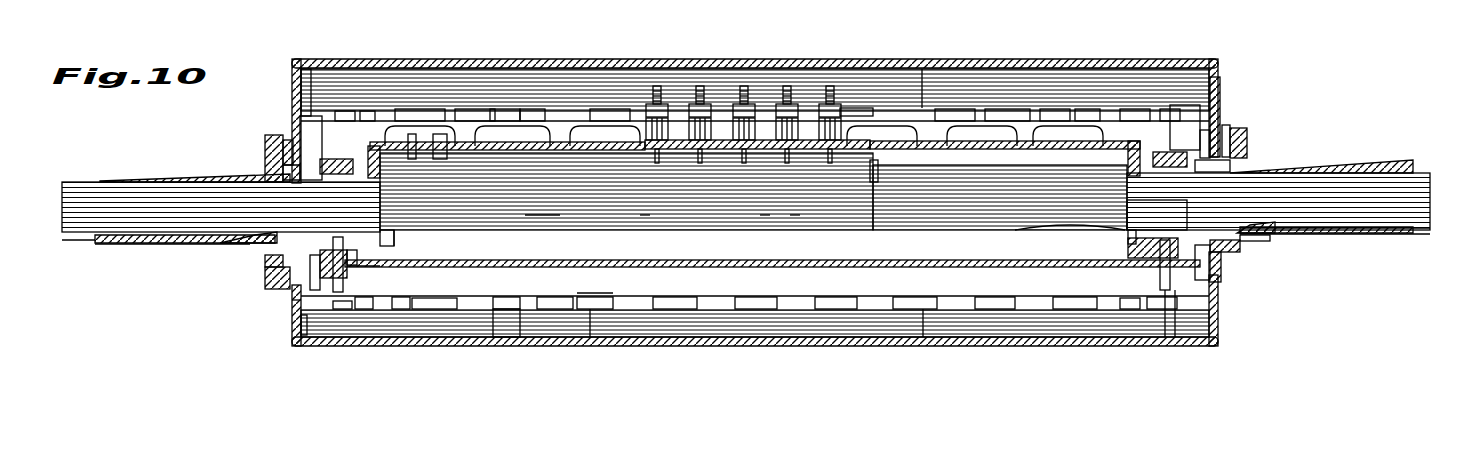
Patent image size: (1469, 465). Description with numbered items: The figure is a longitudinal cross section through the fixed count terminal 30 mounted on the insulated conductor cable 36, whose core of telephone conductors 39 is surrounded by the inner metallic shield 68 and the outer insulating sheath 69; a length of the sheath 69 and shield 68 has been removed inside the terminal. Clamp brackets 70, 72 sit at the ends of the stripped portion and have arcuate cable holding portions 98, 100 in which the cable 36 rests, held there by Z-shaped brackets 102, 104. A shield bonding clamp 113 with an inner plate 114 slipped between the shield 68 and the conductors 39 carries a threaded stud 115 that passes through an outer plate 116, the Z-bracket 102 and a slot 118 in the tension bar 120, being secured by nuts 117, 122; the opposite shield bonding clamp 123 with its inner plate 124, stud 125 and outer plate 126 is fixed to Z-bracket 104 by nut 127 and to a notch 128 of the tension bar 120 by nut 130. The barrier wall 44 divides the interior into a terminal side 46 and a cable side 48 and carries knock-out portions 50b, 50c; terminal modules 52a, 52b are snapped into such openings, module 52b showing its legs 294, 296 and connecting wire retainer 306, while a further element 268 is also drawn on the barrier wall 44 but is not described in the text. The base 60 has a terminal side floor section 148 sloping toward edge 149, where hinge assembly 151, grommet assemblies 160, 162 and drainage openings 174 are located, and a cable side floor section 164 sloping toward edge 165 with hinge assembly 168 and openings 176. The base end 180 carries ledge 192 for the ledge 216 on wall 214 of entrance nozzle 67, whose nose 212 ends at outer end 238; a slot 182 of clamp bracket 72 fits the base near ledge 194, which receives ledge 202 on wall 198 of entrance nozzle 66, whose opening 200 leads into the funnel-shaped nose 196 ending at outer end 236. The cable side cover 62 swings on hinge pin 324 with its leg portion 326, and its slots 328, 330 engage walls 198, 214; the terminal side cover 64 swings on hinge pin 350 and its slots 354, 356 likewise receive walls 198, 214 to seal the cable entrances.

The fixed count terminal 30 is at (1330, 54).
The insulated conductor cable 36 is at (80, 186).
The telephone conductors 39 is at (525, 215).
The barrier wall 44 is at (990, 137).
The terminal side 46 is at (470, 127).
The cable side 48 is at (718, 293).
The knock-out portion 50b is at (1073, 141).
The knock-out portion 50c is at (582, 142).
The terminal module 52a is at (766, 128).
The terminal module 52b is at (795, 215).
The base 60 is at (290, 306).
The cable side cover 62 is at (806, 348).
The terminal side cover 64 is at (700, 58).
The entrance nozzle 66 is at (1335, 165).
The entrance nozzle 67 is at (146, 176).
The inner metallic shield 68 is at (230, 232).
The outer insulating sheath 69 is at (215, 248).
The clamp bracket 70 is at (351, 159).
The clamp bracket 72 is at (1162, 150).
The cable holding portion 98 is at (292, 170).
The cable holding portion 100 is at (1215, 162).
The Z-shaped bracket 102 is at (345, 263).
The Z-shaped bracket 104 is at (1150, 262).
The shield bonding clamp 113 is at (396, 238).
The inner plate 114 is at (400, 232).
The threaded stud 115 is at (338, 290).
The outer plate 116 is at (360, 268).
The nut 117 is at (345, 256).
The slot 118 is at (300, 322).
The tension bar 120 is at (850, 268).
The nut 122 is at (356, 266).
The shield bonding clamp 123 is at (1112, 240).
The inner plate 124 is at (1050, 225).
The threaded stud 125 is at (1175, 275).
The outer plate 126 is at (1210, 280).
The nut 127 is at (1140, 252).
The notch 128 is at (1168, 222).
The nut 130 is at (1160, 275).
The terminal side floor section 148 is at (560, 128).
The elongated edge 149 is at (510, 121).
The hinge assembly 151 is at (963, 108).
The grommet assembly 160 is at (425, 126).
The grommet assembly 162 is at (1040, 126).
The cable side floor section 164 is at (478, 310).
The elongated edge 165 is at (512, 306).
The hinge assembly 168 is at (535, 312).
The openings 174 is at (858, 108).
The openings 176 is at (548, 297).
The end of the base 180 is at (318, 116).
The slot 182 is at (1182, 105).
The ledge 192 is at (308, 69).
The support ledge 194 is at (1205, 135).
The funnel-shaped nose portion 196 is at (1388, 236).
The wall 198 is at (1250, 243).
The opening 200 is at (1378, 176).
The ledge 202 is at (1226, 130).
The funnel-shaped nose section 212 is at (153, 246).
The wall portion 214 is at (265, 262).
The ledge 216 is at (287, 140).
The outer end 236 is at (1416, 236).
The outer end 238 is at (98, 244).
The lead 268 is at (878, 137).
The leg 294 is at (645, 215).
The leg 296 is at (805, 215).
The connecting wire retainer 306 is at (765, 215).
The hinge pin 324 is at (958, 309).
The leg portion 326 is at (1218, 290).
The slot 328 is at (1240, 260).
The slot 330 is at (265, 278).
The hinge pin 350 is at (1215, 110).
The slot 354 is at (1247, 145).
The slot 356 is at (265, 146).